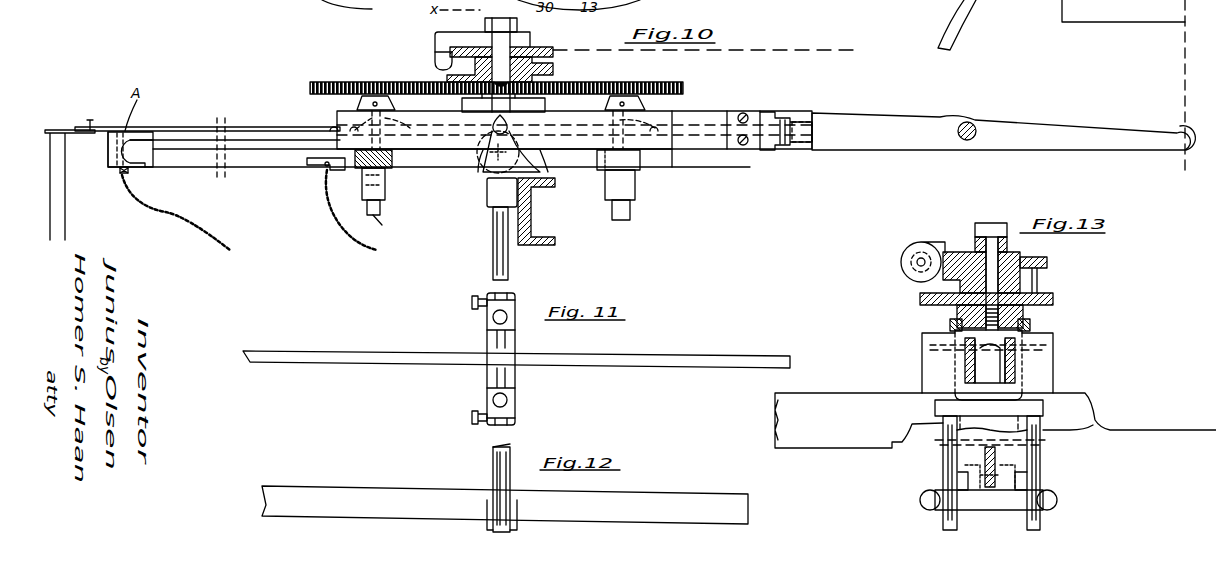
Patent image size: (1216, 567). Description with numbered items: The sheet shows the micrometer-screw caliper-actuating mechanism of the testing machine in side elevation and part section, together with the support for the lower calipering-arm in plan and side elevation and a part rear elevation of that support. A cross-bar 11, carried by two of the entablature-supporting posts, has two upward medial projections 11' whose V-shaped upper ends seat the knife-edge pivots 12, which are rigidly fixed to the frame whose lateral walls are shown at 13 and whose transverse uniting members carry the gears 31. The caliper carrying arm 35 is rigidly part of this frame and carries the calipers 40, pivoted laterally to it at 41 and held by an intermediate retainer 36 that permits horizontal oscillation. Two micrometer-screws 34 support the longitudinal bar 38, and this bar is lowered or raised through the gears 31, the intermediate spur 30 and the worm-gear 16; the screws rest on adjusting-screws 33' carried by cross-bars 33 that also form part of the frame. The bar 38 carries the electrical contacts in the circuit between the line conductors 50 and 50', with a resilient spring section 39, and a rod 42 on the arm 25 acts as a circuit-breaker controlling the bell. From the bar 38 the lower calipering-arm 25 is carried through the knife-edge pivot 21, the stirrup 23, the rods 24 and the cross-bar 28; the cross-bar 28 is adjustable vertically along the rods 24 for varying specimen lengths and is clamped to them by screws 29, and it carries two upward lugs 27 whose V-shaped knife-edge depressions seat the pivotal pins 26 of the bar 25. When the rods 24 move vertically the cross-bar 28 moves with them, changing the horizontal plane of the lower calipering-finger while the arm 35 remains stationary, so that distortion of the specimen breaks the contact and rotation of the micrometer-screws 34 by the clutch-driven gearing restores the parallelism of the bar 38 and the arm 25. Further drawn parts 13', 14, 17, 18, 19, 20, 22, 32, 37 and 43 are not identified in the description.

In FIG. 10, the cross-bar 11 is at (542, 211).
In FIG. 13, the cross-bar 11 is at (995, 420).
In FIG. 10, the upward medial extending projections 11' is at (454, 196).
In FIG. 13, the upward medial extending projections 11' is at (984, 360).
In FIG. 10, the knife-edge pivots 12 is at (520, 128).
In FIG. 13, the knife-edge pivots 12 is at (922, 342).
In FIG. 10, the frame 13 is at (486, 137).
In FIG. 13, the frame 13 is at (993, 319).
In FIG. 10, the hub 13' is at (512, 69).
In FIG. 13, the hub 13' is at (950, 277).
In FIG. 13, the nut collar 14 is at (1023, 315).
In FIG. 10, the worm-gear 16 is at (553, 50).
In FIG. 13, the worm-gear 16 is at (1047, 262).
In FIG. 13, the bolt 17 is at (992, 270).
In FIG. 13, the lever 18 is at (900, 255).
In FIG. 13, the pivot pin 19 is at (912, 268).
In FIG. 13, the pin 20 is at (1038, 280).
In FIG. 10, the knife-edge pivot 21 is at (536, 163).
In FIG. 11, the knife-edge pivot 21 is at (515, 335).
In FIG. 13, the knife-edge pivot 21 is at (1012, 372).
In FIG. 13, the lug 22 is at (975, 370).
In FIG. 10, the stirrup 23 is at (492, 196).
In FIG. 13, the stirrup 23 is at (1043, 410).
In FIG. 10, the rods 24 is at (493, 250).
In FIG. 11, the rods 24 is at (492, 320).
In FIG. 13, the rods 24 is at (943, 460).
In FIG. 11, the lower calipering-arm 25 is at (650, 362).
In FIG. 12, the lower calipering-arm 25 is at (648, 488).
In FIG. 13, the lower calipering-arm 25 is at (1015, 470).
In FIG. 12, the knife-edge pivotal pins 26 is at (510, 500).
In FIG. 13, the knife-edge pivotal pins 26 is at (985, 455).
In FIG. 11, the upward-extending lugs 27 is at (515, 340).
In FIG. 12, the upward-extending lugs 27 is at (518, 514).
In FIG. 13, the upward-extending lugs 27 is at (958, 480).
In FIG. 13, the cross-bar 28 is at (989, 500).
In FIG. 11, the screws 29 is at (472, 302).
In FIG. 13, the screws 29 is at (928, 510).
In FIG. 10, the intermediate spur 30 is at (448, 80).
In FIG. 13, the intermediate spur 30 is at (1053, 296).
In FIG. 10, the micrometer-gears 31 is at (320, 82).
In FIG. 10, the guide 32 is at (660, 115).
In FIG. 10, the cross-bars 33 is at (515, 175).
In FIG. 10, the adjusting-screws 33' is at (510, 221).
In FIG. 10, the micrometer-screws 34 is at (325, 198).
In FIG. 10, the caliper carrying arm 35 is at (694, 125).
In FIG. 10, the intermediate retainer 36 is at (962, 141).
In FIG. 10, the arm end 37 is at (1182, 128).
In FIG. 10, the longitudinal bar 38 is at (238, 182).
In FIG. 13, the longitudinal bar 38 is at (1053, 352).
In FIG. 10, the resilient spring section 39 is at (146, 130).
In FIG. 10, the calipers 40 is at (1052, 125).
In FIG. 10, the pivot 41 is at (774, 150).
In FIG. 10, the rod 42 is at (66, 178).
In FIG. 10, the stop 43 is at (91, 121).
In FIG. 10, the line conductor 50 is at (144, 177).
In FIG. 10, the line conductor 50' is at (311, 172).